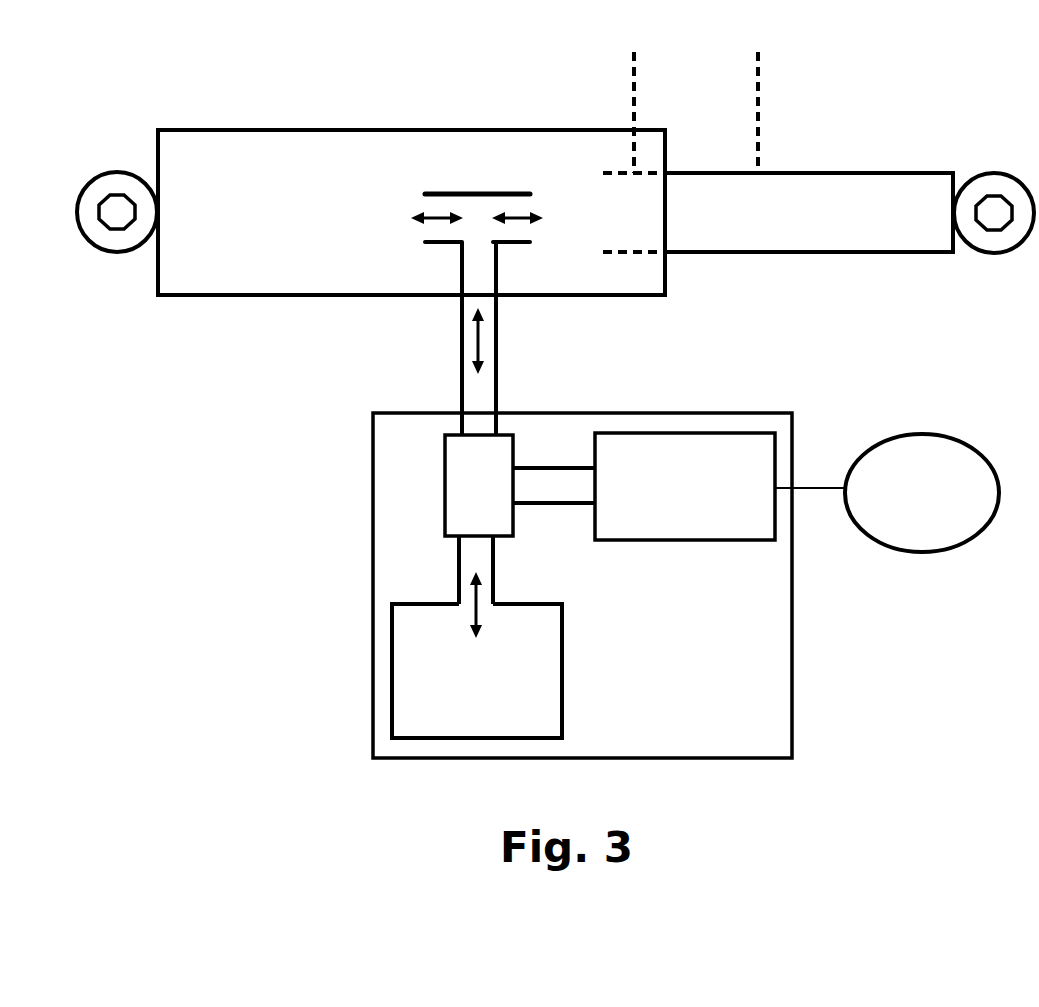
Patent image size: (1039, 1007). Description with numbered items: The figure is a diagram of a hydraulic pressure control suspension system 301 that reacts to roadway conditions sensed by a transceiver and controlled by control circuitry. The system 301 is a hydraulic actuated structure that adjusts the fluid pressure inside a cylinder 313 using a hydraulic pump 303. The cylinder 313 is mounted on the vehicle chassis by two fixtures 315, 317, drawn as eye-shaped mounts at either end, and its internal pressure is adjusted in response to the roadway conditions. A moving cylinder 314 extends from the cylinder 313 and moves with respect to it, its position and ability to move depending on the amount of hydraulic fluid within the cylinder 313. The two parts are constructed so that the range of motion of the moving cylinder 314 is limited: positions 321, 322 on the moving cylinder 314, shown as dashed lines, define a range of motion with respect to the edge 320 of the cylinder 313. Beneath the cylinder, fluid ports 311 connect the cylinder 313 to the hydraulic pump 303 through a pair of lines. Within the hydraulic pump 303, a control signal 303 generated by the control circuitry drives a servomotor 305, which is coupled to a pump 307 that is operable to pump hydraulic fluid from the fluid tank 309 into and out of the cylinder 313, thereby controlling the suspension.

The system 301 is at (212, 76).
The hydraulic pump 303 is at (686, 585).
The servomotor 305 is at (685, 486).
The pump 307 is at (520, 519).
The fluid tank 309 is at (477, 655).
The fluid ports / piston 311 is at (460, 280).
The cylinder 313 is at (213, 297).
The moving cylinder 314 is at (842, 257).
The fixture 315 is at (123, 257).
The fixture 317 is at (995, 258).
The edge 320 is at (665, 145).
The position 321 is at (630, 95).
The position 322 is at (760, 103).